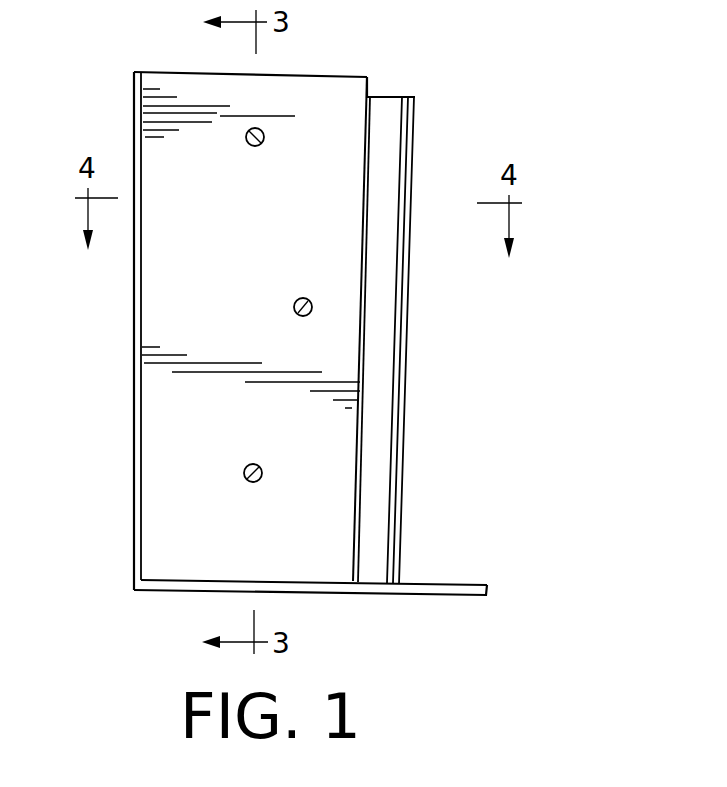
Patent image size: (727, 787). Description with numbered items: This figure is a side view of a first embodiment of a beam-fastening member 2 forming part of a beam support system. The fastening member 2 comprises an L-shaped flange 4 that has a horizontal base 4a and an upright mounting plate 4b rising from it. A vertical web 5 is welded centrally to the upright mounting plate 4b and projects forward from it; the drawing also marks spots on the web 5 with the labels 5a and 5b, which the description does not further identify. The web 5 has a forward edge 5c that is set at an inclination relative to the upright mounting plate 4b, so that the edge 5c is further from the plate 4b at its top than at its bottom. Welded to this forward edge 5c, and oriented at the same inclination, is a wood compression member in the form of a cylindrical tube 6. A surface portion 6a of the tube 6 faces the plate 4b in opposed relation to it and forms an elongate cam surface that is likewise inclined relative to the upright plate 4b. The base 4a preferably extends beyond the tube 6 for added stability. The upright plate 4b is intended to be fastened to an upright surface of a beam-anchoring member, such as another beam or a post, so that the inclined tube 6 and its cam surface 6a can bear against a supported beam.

The fastening member 2 is at (305, 308).
The L-shaped flange 4 is at (183, 580).
The base 4a is at (298, 583).
The upright mounting plate 4b is at (141, 275).
The vertical web 5 is at (170, 402).
The rivet 5a is at (308, 296).
The rivets 5b is at (262, 146).
The forward edge 5c is at (365, 137).
The cylindrical tube 6 is at (380, 405).
The surface portion 6a is at (365, 488).